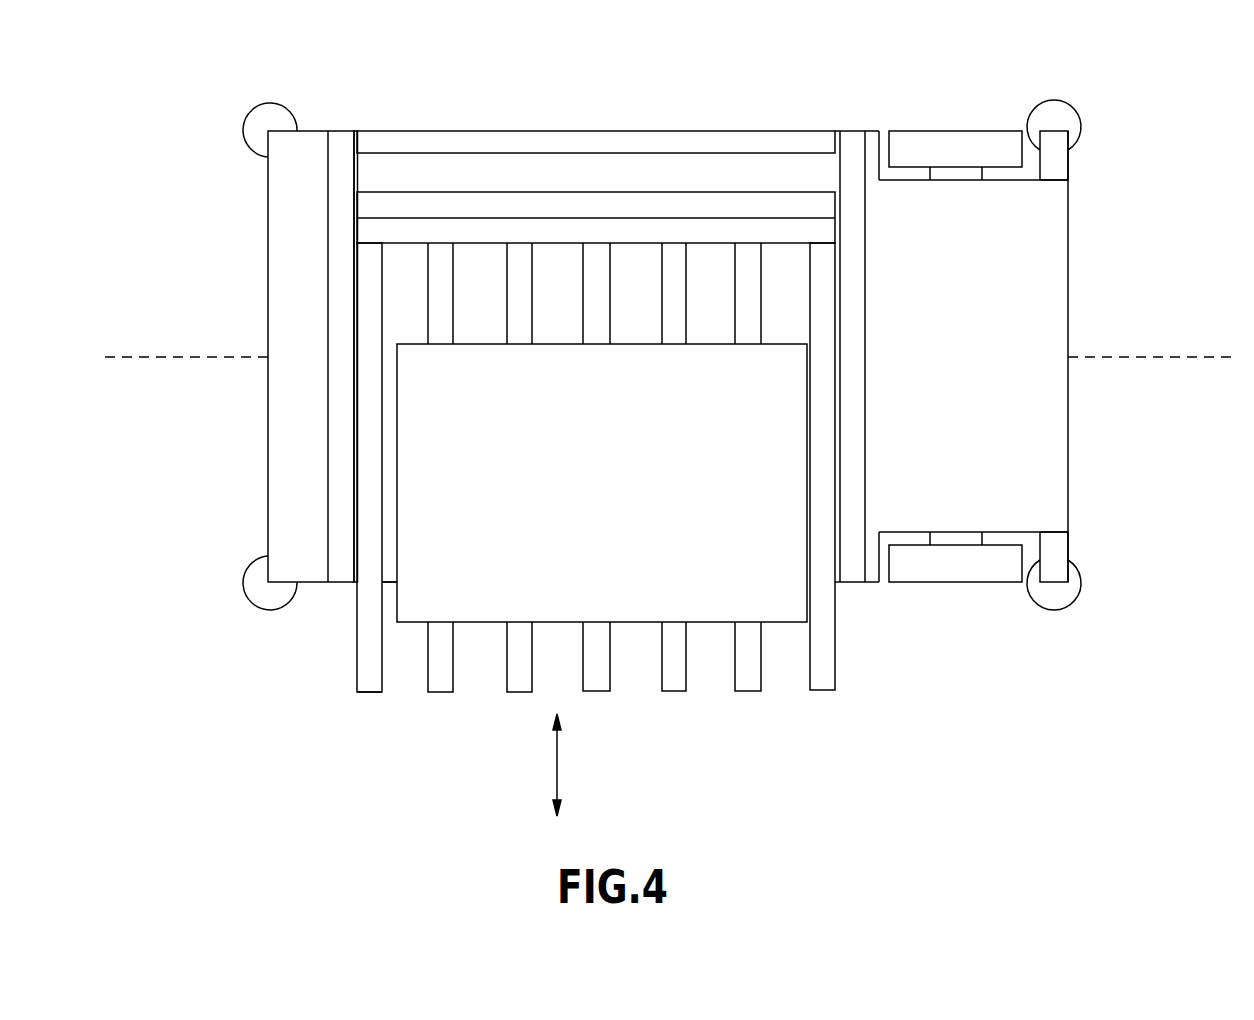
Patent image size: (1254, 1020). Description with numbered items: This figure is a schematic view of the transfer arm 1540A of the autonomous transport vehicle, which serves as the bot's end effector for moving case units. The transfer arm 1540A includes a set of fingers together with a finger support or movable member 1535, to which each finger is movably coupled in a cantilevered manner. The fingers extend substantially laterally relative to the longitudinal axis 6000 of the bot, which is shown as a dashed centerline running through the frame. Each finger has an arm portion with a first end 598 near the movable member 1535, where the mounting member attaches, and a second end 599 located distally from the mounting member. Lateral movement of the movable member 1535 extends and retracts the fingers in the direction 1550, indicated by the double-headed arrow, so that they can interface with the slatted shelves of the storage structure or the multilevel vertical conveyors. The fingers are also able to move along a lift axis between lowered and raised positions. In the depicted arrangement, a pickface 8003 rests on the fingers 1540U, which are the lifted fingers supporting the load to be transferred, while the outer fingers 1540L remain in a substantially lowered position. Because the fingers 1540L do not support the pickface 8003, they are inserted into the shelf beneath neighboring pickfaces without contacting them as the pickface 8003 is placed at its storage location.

The first end 598 is at (371, 240).
The movable member 1535 is at (786, 206).
The longitudinal axis 6000 is at (1156, 356).
The pickface 8003 is at (787, 600).
The fingers 1540L is at (370, 670).
The second end 599 is at (368, 692).
The fingers 1540U is at (806, 735).
The transfer arm 1540A is at (407, 690).
The direction of extension and retraction 1550 is at (558, 765).